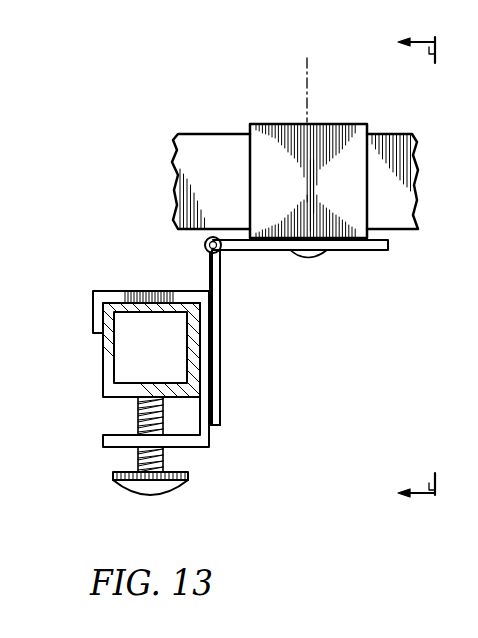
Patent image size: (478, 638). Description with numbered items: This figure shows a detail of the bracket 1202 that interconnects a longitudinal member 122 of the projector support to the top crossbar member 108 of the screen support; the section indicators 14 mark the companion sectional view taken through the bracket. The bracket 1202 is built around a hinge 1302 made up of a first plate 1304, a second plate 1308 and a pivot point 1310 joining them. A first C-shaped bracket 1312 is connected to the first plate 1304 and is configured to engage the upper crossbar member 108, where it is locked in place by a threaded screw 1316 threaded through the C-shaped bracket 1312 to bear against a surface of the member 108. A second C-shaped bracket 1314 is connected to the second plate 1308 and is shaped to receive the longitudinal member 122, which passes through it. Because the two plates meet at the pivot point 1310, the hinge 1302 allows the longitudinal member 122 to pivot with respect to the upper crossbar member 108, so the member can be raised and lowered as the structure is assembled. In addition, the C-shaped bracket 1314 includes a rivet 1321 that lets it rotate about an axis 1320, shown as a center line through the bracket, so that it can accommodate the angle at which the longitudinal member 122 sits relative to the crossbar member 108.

The section line 14- 14 is at (422, 270).
The top crossbar member 108 is at (103, 368).
The longitudinal member 122 is at (210, 134).
The bracket 1202 is at (117, 94).
The hinge 1302 is at (220, 321).
The first plate 1304 is at (222, 405).
The second plate 1308 is at (378, 251).
The pivot point 1310 is at (205, 246).
The first C-shaped bracket 1312 is at (92, 307).
The second C-shaped bracket 1314 is at (345, 124).
The threaded screw 1316 is at (122, 495).
The axis 1320 is at (306, 62).
The rivet 1321 is at (312, 258).